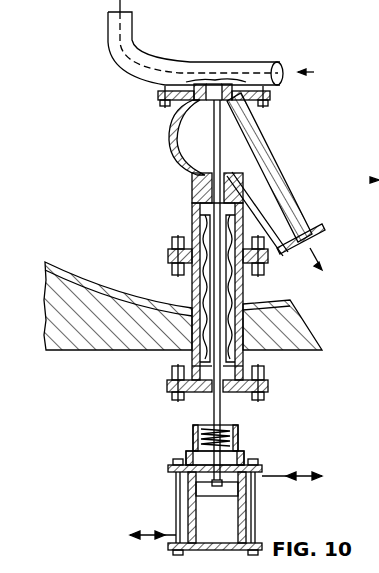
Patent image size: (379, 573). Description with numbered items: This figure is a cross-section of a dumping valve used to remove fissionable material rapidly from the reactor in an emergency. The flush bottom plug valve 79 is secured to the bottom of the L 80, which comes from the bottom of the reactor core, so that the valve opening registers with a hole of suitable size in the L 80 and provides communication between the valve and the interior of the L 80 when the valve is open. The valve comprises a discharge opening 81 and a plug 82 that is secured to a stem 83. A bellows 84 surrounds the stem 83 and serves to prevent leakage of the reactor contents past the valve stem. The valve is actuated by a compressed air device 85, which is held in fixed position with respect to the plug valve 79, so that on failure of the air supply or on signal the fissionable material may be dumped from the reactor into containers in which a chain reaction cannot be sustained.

The flush bottom plug valve 79 is at (172, 140).
The L 80 is at (158, 62).
The discharge opening 81 is at (295, 205).
The plug 82 is at (246, 121).
The stem 83 is at (213, 148).
The bellows 84 is at (241, 281).
The compressed air device 85 is at (172, 468).